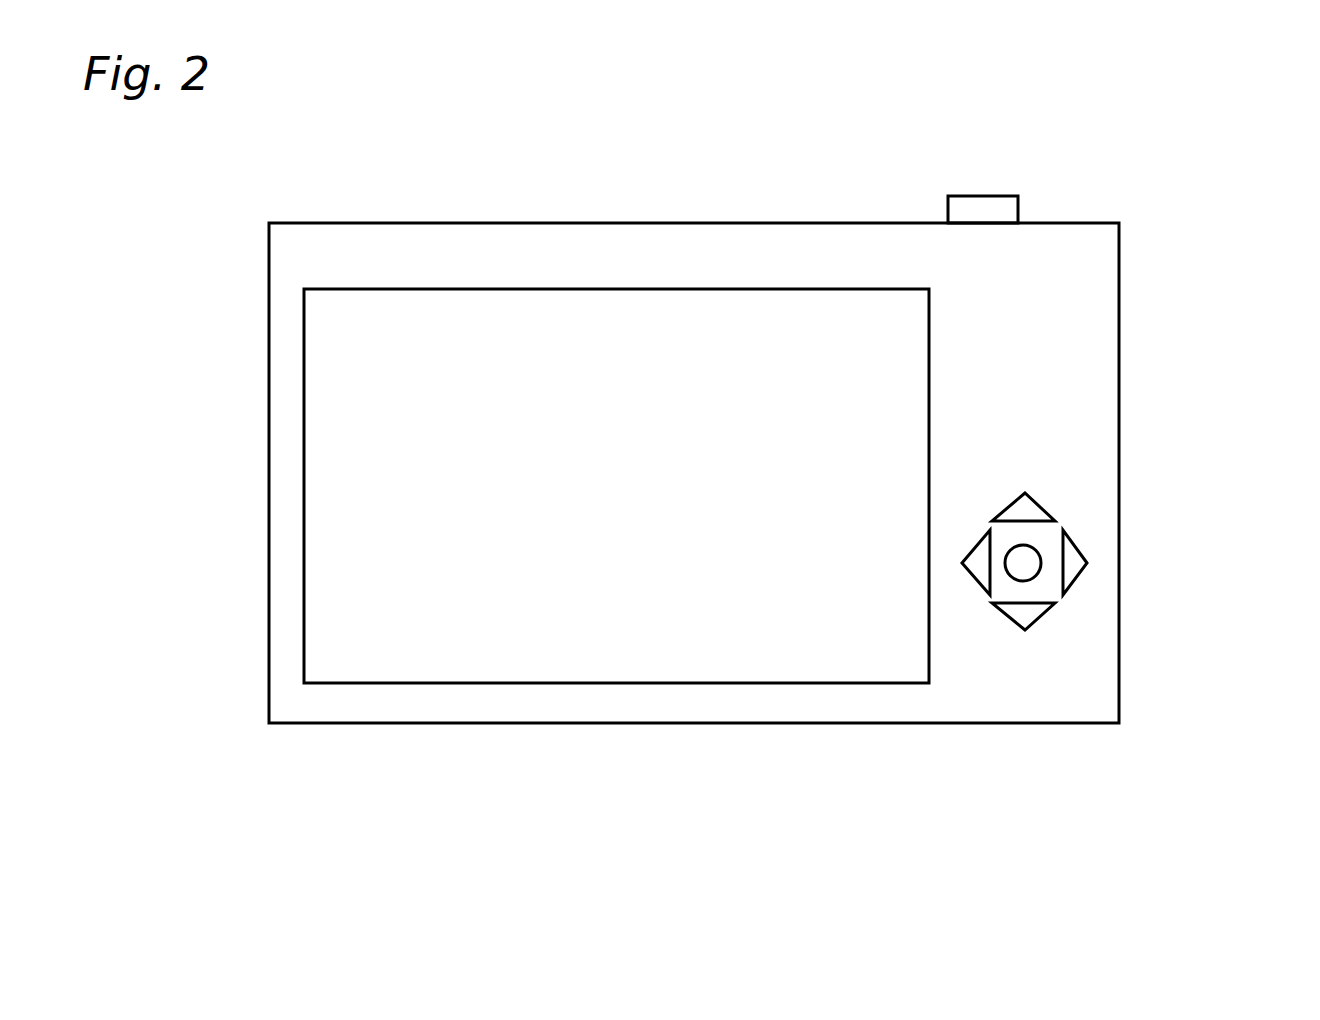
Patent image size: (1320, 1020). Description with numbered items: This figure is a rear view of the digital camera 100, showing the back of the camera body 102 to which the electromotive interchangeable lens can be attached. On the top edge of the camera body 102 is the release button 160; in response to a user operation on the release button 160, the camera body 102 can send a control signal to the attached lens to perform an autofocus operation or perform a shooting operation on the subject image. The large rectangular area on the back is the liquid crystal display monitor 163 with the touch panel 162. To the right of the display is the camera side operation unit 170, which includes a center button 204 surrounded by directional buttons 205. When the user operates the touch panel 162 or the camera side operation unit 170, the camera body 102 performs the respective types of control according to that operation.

The digital camera 100 is at (292, 175).
The camera body 102 is at (540, 239).
The release button 160 is at (1007, 203).
The touch panel 162 is at (616, 553).
The liquid crystal display monitor 163 is at (494, 471).
The camera side operation unit 170 is at (1138, 572).
The center button 204 is at (1105, 536).
The directional buttons 205 is at (1028, 611).